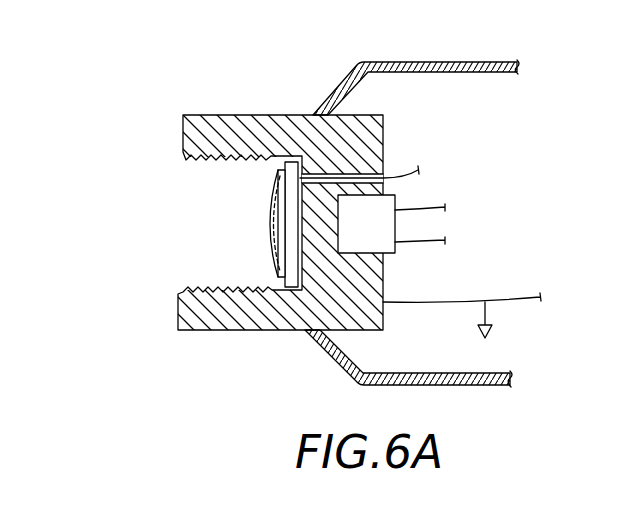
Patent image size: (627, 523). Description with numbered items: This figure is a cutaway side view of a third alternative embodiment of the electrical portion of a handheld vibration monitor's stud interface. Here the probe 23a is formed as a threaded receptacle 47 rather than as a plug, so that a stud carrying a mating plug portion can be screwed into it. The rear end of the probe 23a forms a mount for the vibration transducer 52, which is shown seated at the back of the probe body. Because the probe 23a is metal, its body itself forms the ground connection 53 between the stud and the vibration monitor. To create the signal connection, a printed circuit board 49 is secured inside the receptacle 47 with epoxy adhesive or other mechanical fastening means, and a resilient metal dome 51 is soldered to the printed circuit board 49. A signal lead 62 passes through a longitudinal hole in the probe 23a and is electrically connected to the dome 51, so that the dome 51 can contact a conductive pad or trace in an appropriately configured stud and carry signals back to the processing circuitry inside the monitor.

The probe 23a is at (271, 126).
The threaded receptacle 47 is at (188, 182).
The printed circuit board 49 is at (284, 278).
The resilient metal dome 51 is at (270, 231).
The vibration transducer 52 is at (385, 235).
The ground connection 53 is at (523, 300).
The signal lead 62 is at (410, 173).